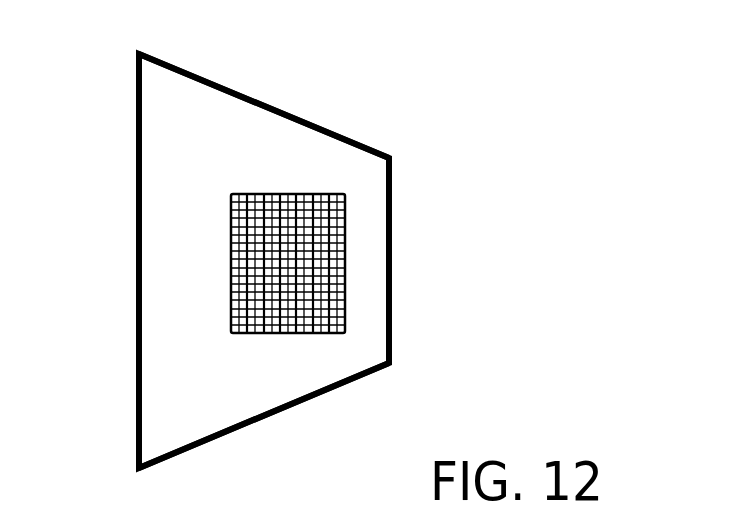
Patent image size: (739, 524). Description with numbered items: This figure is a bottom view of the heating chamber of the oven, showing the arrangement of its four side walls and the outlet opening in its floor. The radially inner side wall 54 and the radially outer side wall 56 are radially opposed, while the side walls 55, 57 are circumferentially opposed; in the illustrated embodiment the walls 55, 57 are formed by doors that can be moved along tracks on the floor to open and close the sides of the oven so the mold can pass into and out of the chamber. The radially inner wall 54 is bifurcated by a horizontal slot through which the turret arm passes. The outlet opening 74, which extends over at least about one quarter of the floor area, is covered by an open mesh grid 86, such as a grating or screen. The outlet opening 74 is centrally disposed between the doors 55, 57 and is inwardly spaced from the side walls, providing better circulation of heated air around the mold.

The radially inner side wall 54 is at (390, 193).
The side wall (door) 55 is at (277, 108).
The radially outer side wall 56 is at (136, 190).
The side wall (door) 57 is at (300, 405).
The outlet opening 74 is at (345, 307).
The open mesh grid 86 is at (325, 252).